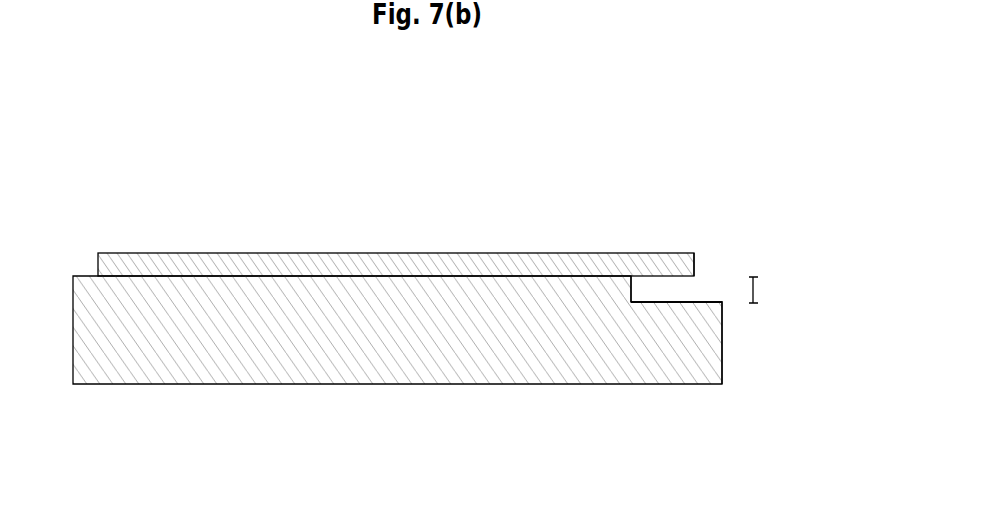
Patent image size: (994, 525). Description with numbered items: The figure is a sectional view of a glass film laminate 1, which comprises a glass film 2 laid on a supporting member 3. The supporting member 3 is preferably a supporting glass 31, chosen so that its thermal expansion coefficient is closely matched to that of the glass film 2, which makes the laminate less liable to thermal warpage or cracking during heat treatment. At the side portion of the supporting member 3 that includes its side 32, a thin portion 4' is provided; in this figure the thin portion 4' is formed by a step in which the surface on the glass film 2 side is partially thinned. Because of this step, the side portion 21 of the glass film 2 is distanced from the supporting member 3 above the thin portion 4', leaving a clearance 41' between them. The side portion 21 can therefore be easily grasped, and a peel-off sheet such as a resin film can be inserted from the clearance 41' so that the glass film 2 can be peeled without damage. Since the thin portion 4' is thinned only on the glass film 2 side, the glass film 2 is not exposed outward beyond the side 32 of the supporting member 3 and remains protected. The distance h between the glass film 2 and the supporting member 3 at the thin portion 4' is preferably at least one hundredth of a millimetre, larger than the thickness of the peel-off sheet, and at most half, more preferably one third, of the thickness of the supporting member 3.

The glass film laminate 1 is at (695, 186).
The glass film 2 is at (277, 253).
The side portion of the glass film 21 is at (694, 262).
The supporting member 3 is at (315, 363).
The supporting glass 31 is at (397, 330).
The side of the supporting member 32 is at (722, 343).
The clearance 41' is at (604, 213).
The thin portion 4' is at (711, 390).
The distance h is at (768, 291).